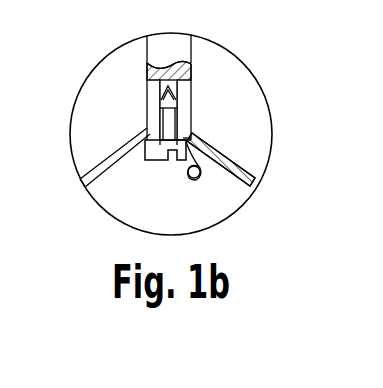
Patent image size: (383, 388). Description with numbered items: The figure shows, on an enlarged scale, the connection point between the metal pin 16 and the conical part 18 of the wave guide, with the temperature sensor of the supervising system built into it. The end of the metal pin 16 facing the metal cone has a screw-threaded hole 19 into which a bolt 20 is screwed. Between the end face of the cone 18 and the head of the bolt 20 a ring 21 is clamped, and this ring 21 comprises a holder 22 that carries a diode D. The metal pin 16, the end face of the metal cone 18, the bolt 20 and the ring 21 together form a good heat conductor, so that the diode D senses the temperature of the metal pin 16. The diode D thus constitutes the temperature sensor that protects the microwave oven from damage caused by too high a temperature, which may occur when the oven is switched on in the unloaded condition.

The metal pin 16 is at (178, 44).
The conical part 18 is at (112, 156).
The screw-threaded hole 19 is at (160, 82).
The bolt 20 is at (173, 110).
The ring 21 is at (183, 138).
The holder 22 is at (200, 178).
The diode D is at (190, 165).